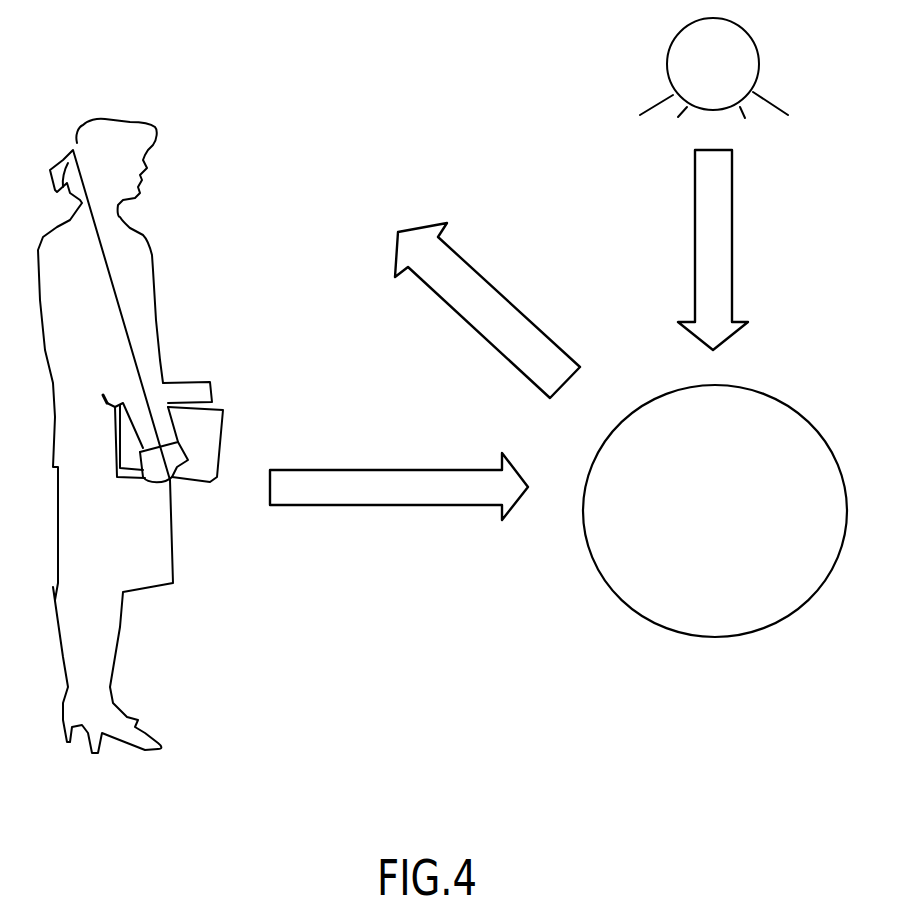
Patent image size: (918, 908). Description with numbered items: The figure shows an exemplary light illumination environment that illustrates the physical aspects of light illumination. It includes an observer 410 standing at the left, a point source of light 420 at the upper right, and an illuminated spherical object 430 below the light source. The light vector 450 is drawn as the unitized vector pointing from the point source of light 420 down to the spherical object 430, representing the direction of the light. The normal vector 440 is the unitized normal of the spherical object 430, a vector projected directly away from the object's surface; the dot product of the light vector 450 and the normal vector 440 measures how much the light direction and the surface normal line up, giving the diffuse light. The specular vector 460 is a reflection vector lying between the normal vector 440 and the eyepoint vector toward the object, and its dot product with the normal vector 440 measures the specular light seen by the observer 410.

The observer 410 is at (135, 280).
The point source of light 420 is at (742, 50).
The illuminated spherical object 430 is at (792, 432).
The normal vector 440 is at (385, 478).
The light vector 450 is at (715, 242).
The specular vector 460 is at (502, 312).